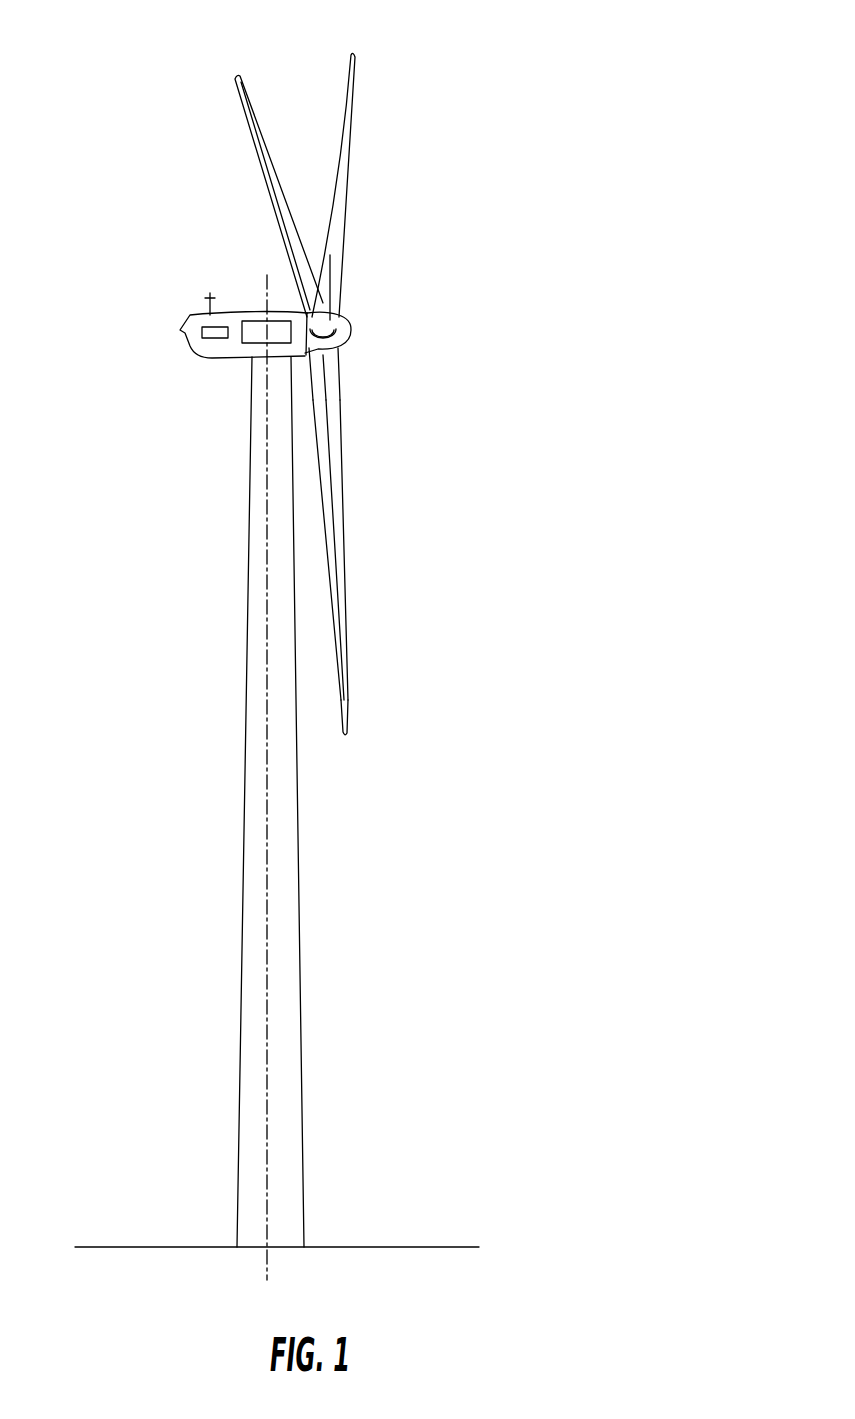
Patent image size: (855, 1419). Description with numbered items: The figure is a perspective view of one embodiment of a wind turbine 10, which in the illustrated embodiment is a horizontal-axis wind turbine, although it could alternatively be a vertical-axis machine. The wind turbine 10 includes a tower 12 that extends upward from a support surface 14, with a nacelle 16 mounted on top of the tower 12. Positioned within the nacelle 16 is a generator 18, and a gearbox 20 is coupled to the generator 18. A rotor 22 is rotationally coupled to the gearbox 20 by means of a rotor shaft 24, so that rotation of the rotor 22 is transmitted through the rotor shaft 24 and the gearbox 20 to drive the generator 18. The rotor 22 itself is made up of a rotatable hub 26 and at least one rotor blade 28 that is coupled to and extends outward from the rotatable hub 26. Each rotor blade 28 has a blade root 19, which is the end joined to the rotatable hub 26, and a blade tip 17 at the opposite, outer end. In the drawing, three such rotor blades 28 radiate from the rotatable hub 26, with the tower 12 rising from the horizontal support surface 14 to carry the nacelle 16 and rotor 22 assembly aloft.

The wind turbine 10 is at (479, 89).
The tower 12 is at (242, 938).
The support surface 14 is at (158, 1247).
The nacelle 16 is at (200, 358).
The blade tip 17 is at (350, 727).
The generator 18 is at (203, 325).
The blade root 19 is at (338, 368).
The gearbox 20 is at (248, 320).
The rotor 22 is at (357, 311).
The rotor shaft 24 is at (302, 336).
The rotatable hub 26 is at (350, 340).
The rotor blade 28 is at (256, 146).